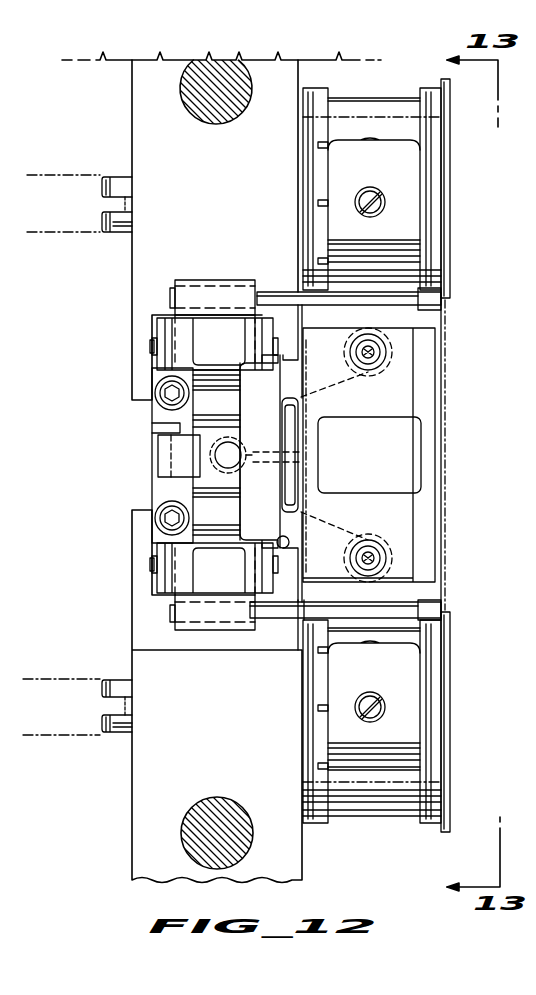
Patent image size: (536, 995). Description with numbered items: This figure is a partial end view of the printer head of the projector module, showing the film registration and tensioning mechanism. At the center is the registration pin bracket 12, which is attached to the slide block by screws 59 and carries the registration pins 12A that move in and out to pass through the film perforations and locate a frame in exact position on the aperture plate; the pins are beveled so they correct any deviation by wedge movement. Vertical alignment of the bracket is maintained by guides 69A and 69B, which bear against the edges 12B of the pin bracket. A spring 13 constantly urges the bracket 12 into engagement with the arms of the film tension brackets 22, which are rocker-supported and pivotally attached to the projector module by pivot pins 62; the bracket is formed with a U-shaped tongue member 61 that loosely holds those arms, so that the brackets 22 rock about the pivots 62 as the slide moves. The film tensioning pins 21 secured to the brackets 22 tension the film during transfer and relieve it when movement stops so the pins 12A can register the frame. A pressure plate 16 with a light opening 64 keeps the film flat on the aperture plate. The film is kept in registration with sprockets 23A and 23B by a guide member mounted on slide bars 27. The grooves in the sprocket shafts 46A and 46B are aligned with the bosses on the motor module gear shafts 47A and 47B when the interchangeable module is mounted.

The registration pin bracket 12 is at (266, 411).
The registration pins 12A is at (324, 348).
The edges of the pin bracket 12B is at (283, 350).
The spring 13 is at (248, 455).
The pressure plate 16 is at (386, 413).
The film tensioning pins 21 is at (441, 296).
The film tension brackets 22 is at (220, 330).
The sprocket 23A is at (448, 700).
The sprocket 23B is at (448, 218).
The slide bars 27 is at (200, 100).
The sprocket shaft 46A is at (120, 685).
The sprocket shaft 46B is at (120, 185).
The motor module gear shaft 47A is at (58, 690).
The motor module gear shaft 47B is at (80, 183).
The screws 59 is at (160, 392).
The tongue member 61 is at (200, 455).
The pivot pins 62 is at (152, 347).
The light opening 64 is at (430, 428).
The guide 69A is at (298, 560).
The guide 69B is at (300, 355).